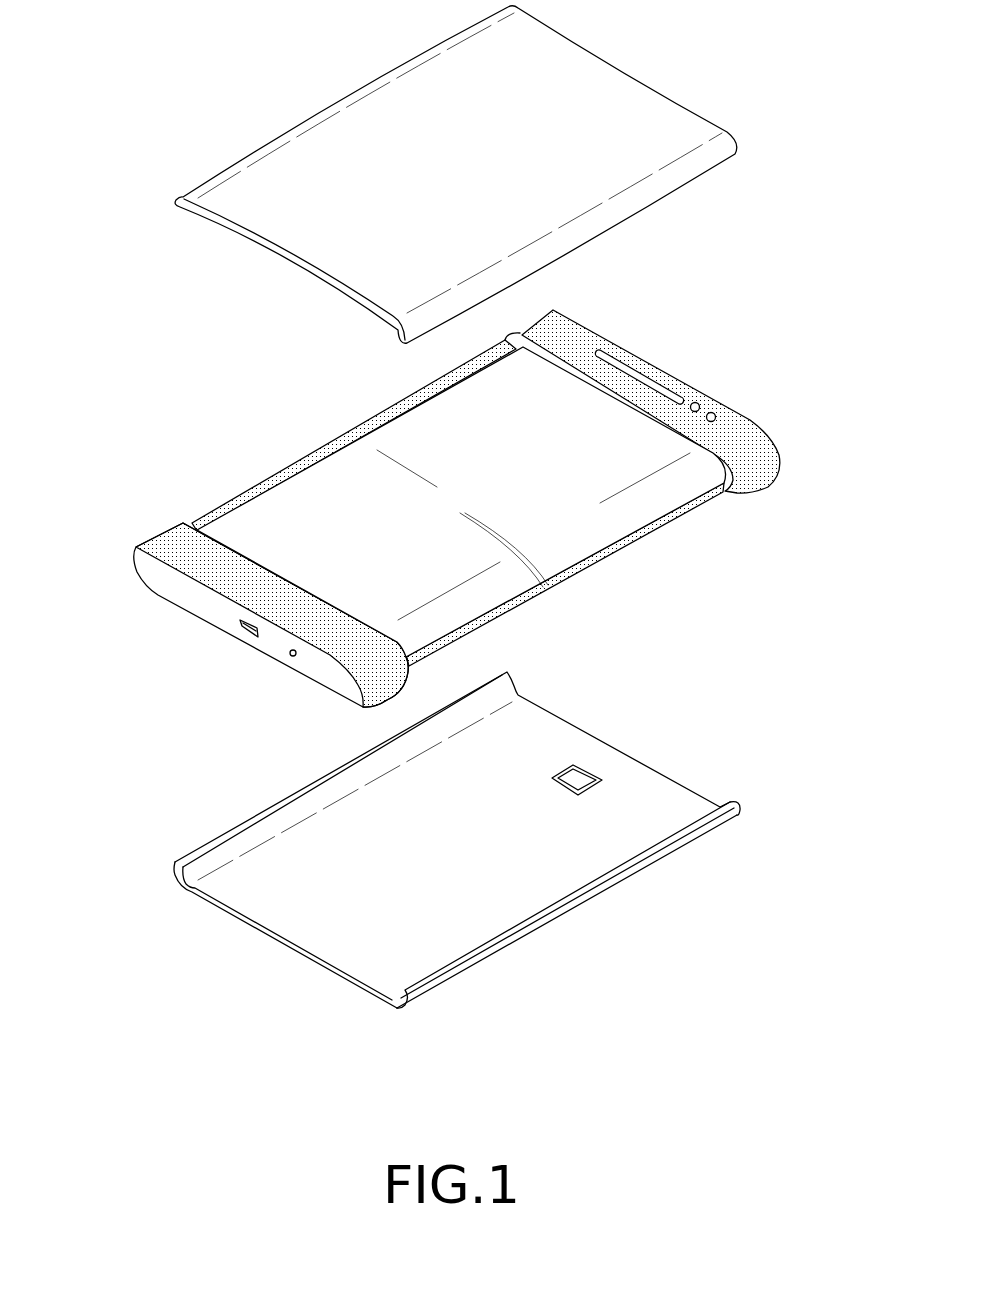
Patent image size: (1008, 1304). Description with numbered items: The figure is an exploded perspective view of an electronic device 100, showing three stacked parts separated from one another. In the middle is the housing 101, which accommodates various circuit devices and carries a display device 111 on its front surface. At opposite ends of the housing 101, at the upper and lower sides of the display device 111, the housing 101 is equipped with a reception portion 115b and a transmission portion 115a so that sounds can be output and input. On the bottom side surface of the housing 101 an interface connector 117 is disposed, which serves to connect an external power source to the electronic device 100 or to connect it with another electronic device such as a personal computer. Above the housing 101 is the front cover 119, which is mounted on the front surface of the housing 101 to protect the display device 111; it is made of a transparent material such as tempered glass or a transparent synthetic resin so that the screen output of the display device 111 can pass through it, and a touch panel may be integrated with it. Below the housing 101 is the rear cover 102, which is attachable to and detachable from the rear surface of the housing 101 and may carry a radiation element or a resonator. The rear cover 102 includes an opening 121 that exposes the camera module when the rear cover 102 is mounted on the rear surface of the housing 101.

The electronic device 100 is at (116, 425).
The housing 101 is at (779, 408).
The rear cover 102 is at (697, 867).
The display device 111 is at (638, 437).
The transmission portion 115a is at (288, 656).
The reception portion 115b is at (627, 364).
The interface connector 117 is at (242, 633).
The front cover 119 is at (706, 91).
The opening 121 is at (585, 780).